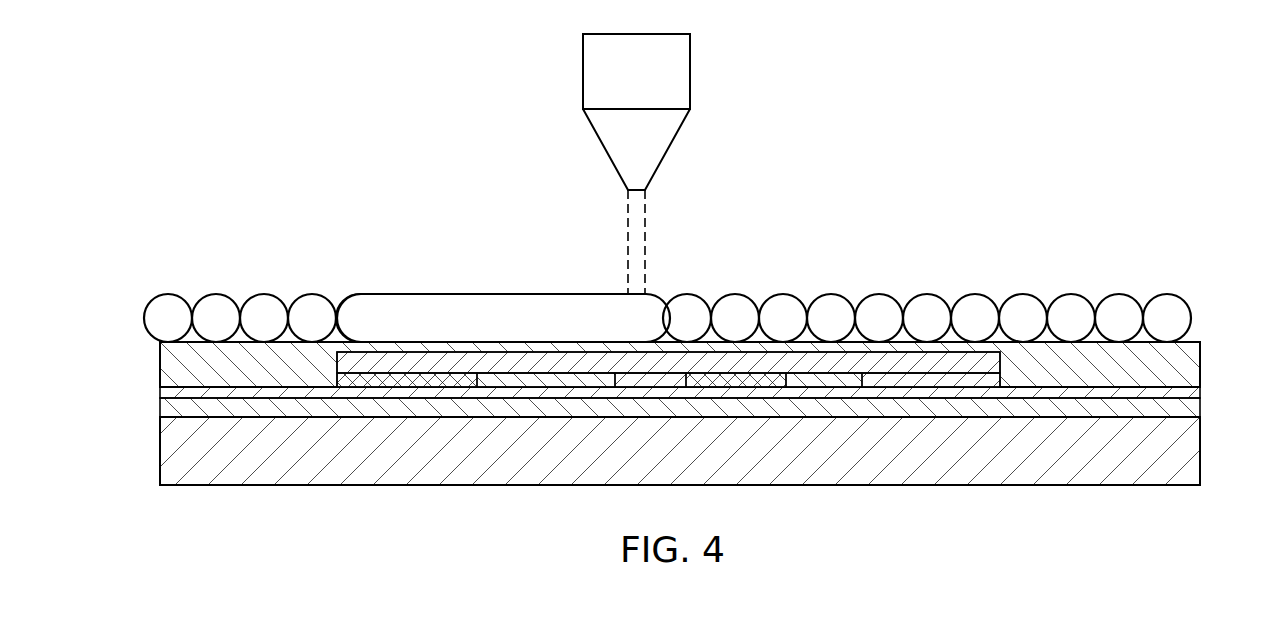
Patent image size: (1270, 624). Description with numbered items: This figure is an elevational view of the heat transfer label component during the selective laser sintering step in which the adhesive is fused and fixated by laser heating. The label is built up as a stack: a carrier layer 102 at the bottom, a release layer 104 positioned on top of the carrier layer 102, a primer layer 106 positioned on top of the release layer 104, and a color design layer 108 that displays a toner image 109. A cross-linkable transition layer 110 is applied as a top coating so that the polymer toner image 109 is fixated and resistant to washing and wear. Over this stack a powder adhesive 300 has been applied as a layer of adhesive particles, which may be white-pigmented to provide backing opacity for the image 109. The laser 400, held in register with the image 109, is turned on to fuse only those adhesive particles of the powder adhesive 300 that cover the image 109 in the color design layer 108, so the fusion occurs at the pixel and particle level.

The carrier layer 102 is at (178, 452).
The release layer 104 is at (167, 408).
The primer layer 106 is at (166, 393).
The color design layer 108 is at (368, 384).
The toner image 109 is at (543, 383).
The transition layer 110 is at (1180, 372).
The powder adhesive 300 is at (1166, 306).
The laser 400 is at (643, 147).